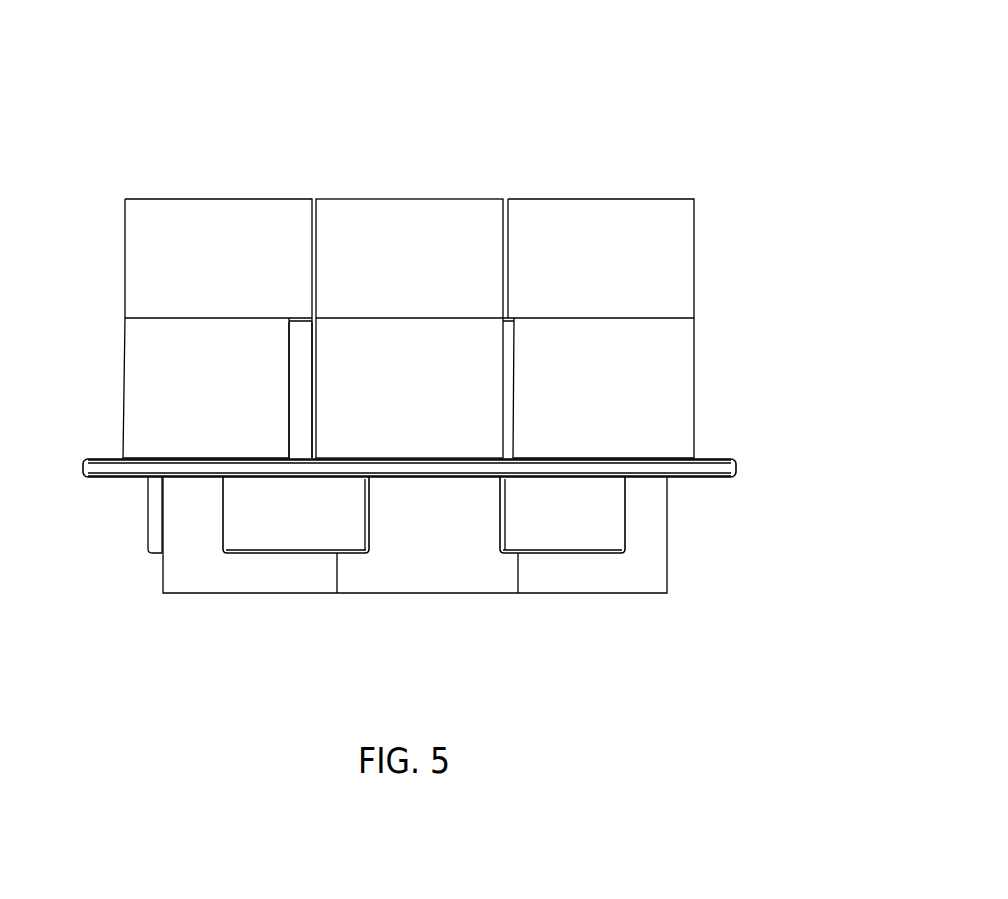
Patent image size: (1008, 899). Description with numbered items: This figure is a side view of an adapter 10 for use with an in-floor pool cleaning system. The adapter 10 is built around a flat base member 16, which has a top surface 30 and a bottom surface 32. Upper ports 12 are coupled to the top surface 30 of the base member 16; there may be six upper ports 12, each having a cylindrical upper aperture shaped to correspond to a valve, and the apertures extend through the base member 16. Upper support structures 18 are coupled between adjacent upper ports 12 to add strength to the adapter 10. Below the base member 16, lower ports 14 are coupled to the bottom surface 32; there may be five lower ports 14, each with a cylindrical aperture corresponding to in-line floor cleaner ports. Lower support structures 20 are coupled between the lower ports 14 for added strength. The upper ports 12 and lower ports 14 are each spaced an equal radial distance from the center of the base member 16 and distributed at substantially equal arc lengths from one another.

The adapter 10 is at (601, 95).
The upper port 12 is at (662, 277).
The lower port 14 is at (442, 568).
The base member 16 is at (736, 463).
The upper support structure 18 is at (302, 352).
The lower support structure 20 is at (583, 530).
The top surface 30 is at (100, 448).
The bottom surface 32 is at (103, 488).